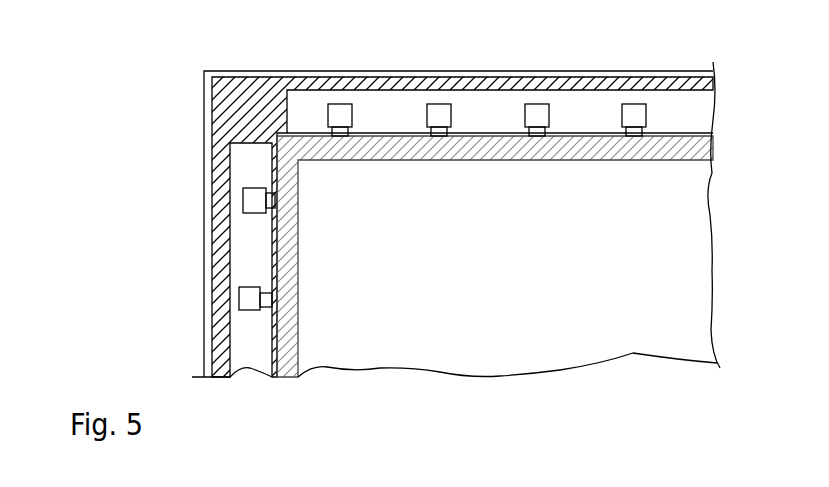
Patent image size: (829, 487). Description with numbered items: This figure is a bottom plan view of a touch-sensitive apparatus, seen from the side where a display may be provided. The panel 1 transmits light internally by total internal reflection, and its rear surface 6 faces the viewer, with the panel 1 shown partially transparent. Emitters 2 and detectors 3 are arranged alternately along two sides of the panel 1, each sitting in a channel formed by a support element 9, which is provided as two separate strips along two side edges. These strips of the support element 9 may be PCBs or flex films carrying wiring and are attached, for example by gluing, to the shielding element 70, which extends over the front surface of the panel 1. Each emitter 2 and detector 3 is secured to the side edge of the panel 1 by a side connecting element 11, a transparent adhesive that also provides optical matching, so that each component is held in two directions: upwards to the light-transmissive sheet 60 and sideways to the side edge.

The panel 1 is at (703, 275).
The emitter 2 is at (341, 108).
The detector 3 is at (438, 110).
The rear surface 6 is at (598, 319).
The support element 9 is at (700, 118).
The side connecting element 11 is at (637, 134).
The light-transmissive sheet 60 is at (207, 98).
The shielding element 70 is at (230, 100).